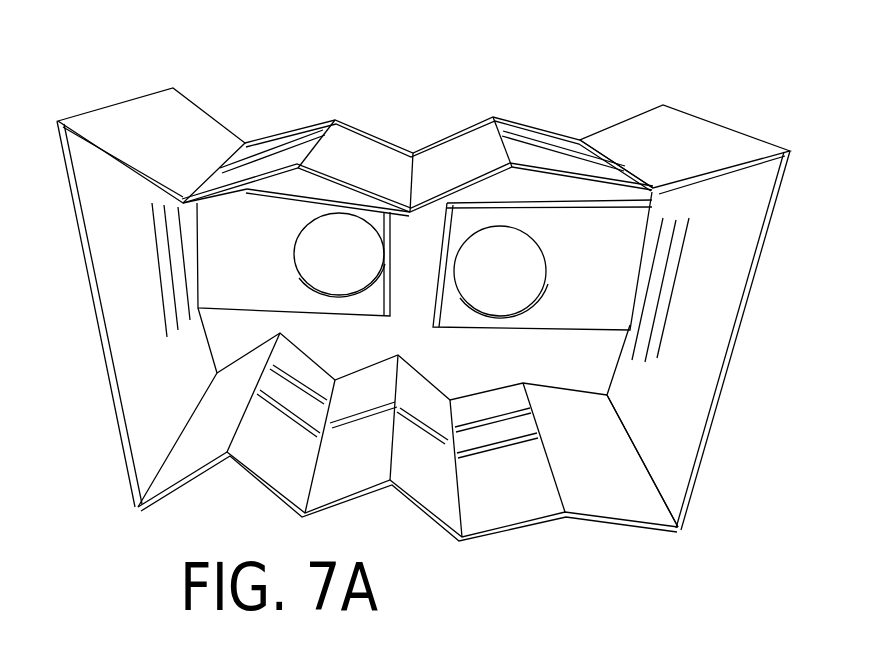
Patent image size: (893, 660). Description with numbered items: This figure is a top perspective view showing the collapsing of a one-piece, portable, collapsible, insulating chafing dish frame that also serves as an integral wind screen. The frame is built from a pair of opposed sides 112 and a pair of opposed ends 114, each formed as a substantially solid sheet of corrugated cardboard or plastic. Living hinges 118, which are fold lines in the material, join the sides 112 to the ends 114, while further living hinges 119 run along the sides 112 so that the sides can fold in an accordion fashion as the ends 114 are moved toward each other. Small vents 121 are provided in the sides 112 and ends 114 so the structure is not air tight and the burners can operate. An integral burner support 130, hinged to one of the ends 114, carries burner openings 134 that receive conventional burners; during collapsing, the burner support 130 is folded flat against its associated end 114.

The side 112 is at (362, 136).
The end 114 is at (141, 232).
The living hinge 118 is at (714, 128).
The living hinge 119 is at (207, 190).
The vent 121 is at (268, 146).
The burner support 130 is at (279, 263).
The burner opening 134 is at (366, 265).